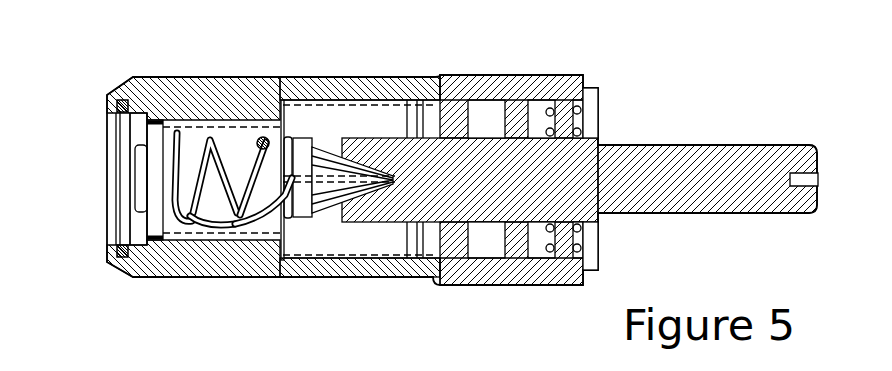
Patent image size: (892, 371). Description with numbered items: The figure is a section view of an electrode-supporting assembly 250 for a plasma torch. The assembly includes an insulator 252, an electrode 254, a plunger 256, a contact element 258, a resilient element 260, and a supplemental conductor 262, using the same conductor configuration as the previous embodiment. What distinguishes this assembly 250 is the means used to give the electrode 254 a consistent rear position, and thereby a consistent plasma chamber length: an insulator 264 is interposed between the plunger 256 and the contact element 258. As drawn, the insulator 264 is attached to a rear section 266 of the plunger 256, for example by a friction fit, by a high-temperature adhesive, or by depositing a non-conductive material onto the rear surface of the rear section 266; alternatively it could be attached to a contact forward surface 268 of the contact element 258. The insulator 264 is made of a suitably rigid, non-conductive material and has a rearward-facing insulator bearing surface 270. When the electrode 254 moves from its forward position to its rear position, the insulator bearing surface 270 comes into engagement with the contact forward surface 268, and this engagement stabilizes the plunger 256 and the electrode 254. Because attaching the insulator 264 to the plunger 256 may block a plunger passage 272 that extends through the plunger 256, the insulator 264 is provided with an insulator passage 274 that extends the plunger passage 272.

The electrode-supporting assembly 250 is at (638, 83).
The insulator 252 is at (518, 84).
The electrode 254 is at (748, 153).
The plunger 256 is at (323, 142).
The contact element 258 is at (135, 170).
The resilient element 260 is at (218, 140).
The supplemental conductor 262 is at (205, 207).
The insulator 264 is at (275, 138).
The rear section 266 is at (288, 225).
The contact forward surface 268 is at (190, 135).
The insulator bearing surface 270 is at (247, 137).
The plunger passage 272 is at (320, 182).
The insulator passage 274 is at (263, 197).